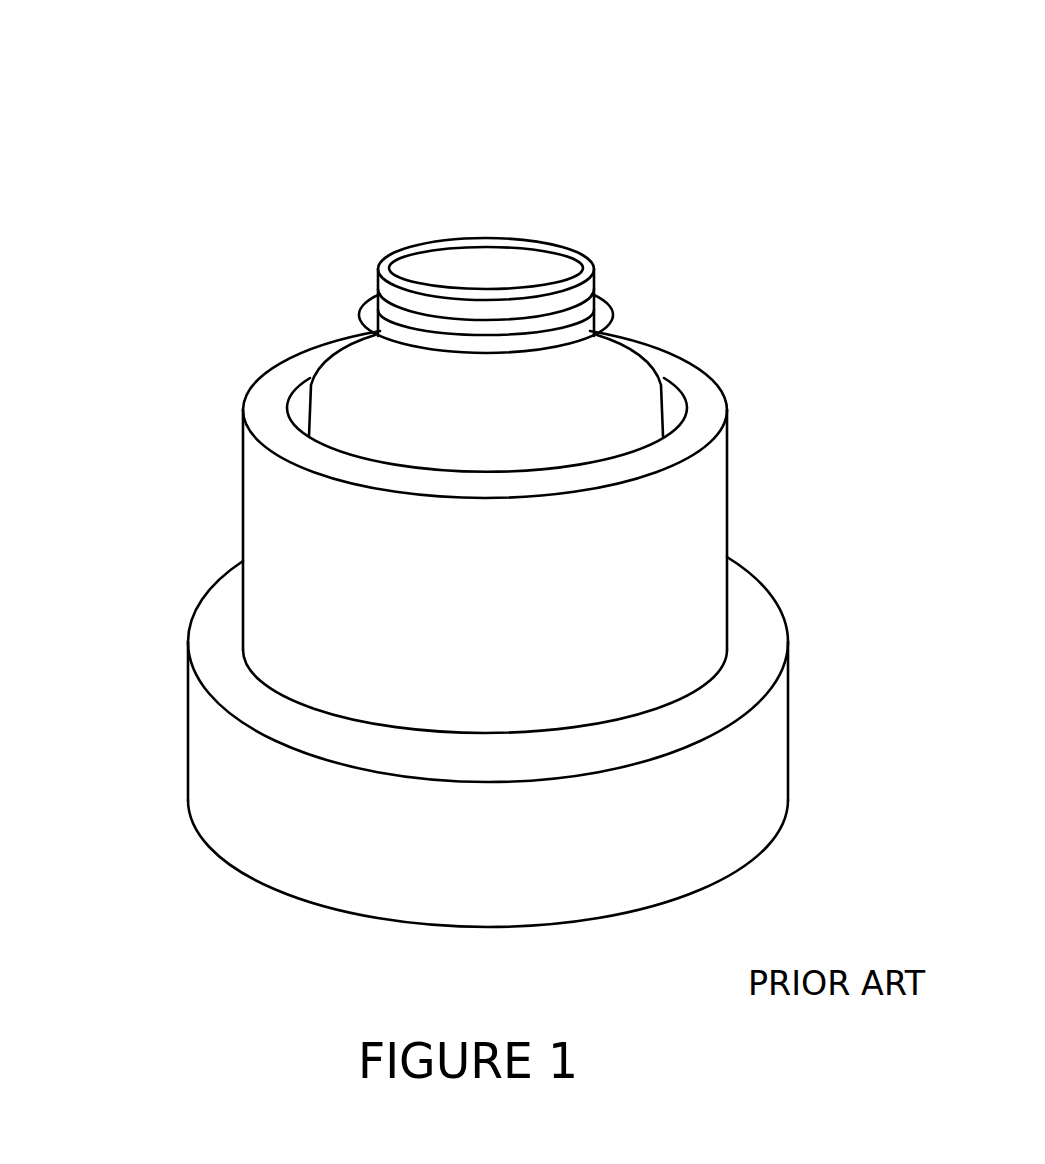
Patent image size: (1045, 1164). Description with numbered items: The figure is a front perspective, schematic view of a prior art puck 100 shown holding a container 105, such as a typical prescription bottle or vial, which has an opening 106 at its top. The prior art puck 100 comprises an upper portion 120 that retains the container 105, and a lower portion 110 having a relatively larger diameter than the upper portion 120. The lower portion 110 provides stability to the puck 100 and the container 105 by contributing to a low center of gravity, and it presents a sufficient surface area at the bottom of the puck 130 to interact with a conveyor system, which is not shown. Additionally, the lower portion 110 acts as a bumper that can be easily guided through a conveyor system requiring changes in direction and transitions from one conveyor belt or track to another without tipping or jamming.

The prior art puck 100 is at (729, 99).
The container 105 is at (372, 377).
The opening 106 is at (468, 267).
The lower portion 110 is at (802, 622).
The upper portion 120 is at (740, 398).
The bottom of the puck 130 is at (278, 908).